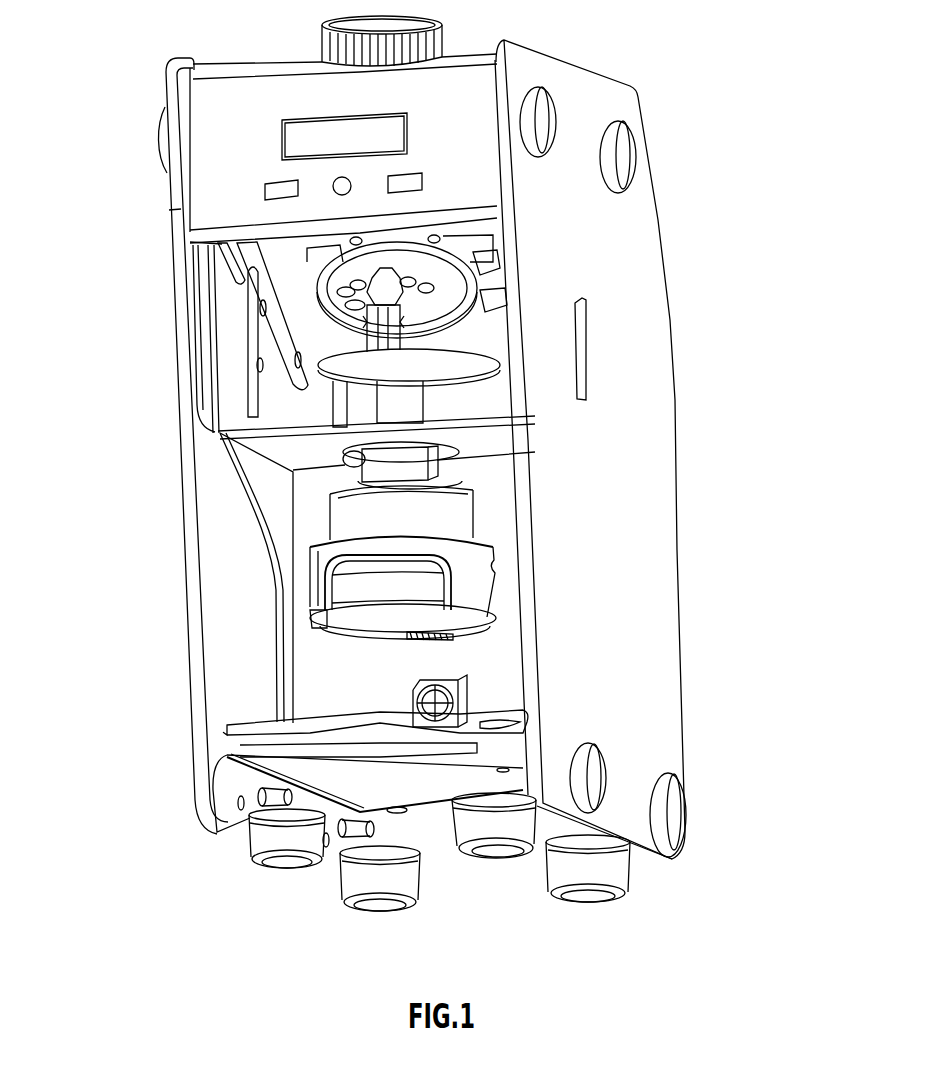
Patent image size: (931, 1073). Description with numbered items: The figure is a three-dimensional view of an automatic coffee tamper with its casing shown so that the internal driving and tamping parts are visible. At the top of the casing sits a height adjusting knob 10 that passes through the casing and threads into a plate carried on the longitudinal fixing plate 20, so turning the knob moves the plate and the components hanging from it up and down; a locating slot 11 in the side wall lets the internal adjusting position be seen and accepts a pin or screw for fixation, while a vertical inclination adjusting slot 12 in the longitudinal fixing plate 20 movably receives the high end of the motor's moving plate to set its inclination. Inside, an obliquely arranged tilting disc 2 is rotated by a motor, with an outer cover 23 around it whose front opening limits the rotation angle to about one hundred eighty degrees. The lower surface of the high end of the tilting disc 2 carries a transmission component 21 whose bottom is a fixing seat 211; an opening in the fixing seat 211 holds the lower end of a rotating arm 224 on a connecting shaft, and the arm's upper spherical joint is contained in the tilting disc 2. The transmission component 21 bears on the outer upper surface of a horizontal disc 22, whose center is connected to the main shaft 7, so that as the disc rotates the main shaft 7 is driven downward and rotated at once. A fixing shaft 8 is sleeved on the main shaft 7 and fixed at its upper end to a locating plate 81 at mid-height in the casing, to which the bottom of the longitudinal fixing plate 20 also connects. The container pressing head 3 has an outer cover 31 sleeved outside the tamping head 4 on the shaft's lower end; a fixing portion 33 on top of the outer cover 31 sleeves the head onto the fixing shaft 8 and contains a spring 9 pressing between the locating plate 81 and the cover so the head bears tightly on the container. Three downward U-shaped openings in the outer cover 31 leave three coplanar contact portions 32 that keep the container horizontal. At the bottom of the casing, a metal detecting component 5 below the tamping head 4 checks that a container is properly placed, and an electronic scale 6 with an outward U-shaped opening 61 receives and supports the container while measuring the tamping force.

The height adjusting knob 10 is at (424, 27).
The longitudinal fixing plate 20 is at (233, 327).
The tilting disc 2 is at (318, 274).
The rotating arm 224 is at (423, 277).
The outer cover 23 is at (457, 305).
The fixing seat 211 is at (400, 340).
The locating slot 11 is at (583, 352).
The main shaft 7 is at (407, 399).
The spring 9 is at (455, 477).
The container pressing head 3 is at (487, 527).
The tamping head 4 is at (407, 587).
The electronic scale 6 is at (483, 723).
The transmission component 21 is at (325, 333).
The inclination adjusting slot 12 is at (250, 343).
The horizontal disc 22 is at (338, 371).
The locating plate 81 is at (297, 453).
The fixing shaft 8 is at (355, 470).
The fixing portion 33 is at (370, 511).
The outer cover 31 is at (325, 568).
The metal detecting component 5 is at (415, 716).
The U-shaped opening 61 is at (285, 737).
The contact portions 32 is at (430, 636).